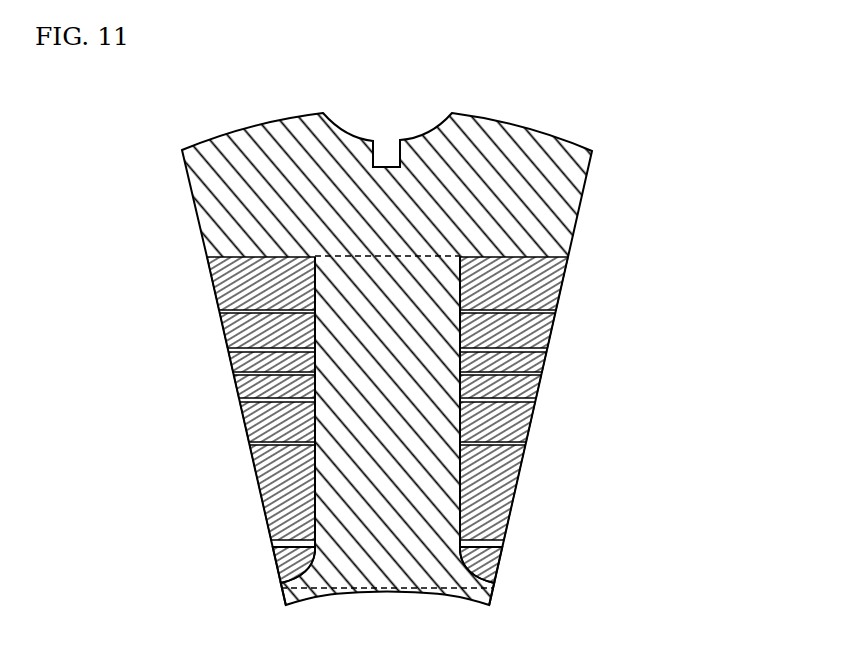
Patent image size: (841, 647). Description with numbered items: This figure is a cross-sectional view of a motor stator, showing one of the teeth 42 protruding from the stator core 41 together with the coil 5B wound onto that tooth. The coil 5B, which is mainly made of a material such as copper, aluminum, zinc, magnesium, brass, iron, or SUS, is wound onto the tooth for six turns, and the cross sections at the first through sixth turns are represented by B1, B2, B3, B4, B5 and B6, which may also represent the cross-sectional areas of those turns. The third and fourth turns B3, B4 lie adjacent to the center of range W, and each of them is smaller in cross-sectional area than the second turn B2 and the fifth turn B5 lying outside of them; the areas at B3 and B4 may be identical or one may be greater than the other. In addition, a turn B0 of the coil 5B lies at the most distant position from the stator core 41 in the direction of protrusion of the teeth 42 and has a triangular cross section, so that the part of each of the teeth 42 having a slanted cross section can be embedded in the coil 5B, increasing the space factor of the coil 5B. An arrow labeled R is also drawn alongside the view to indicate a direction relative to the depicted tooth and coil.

The stator core 41 is at (567, 195).
The teeth 42 is at (442, 574).
The turn B0 of coil B0 is at (412, 565).
The first turn B1 is at (406, 492).
The second turn B2 is at (411, 422).
The third turn B3 is at (415, 389).
The fourth turn B4 is at (415, 366).
The fifth turn B5 is at (414, 330).
The sixth turn B6 is at (411, 283).
The range W is at (333, 262).
The radial direction R is at (123, 308).
The coil 5B is at (618, 262).